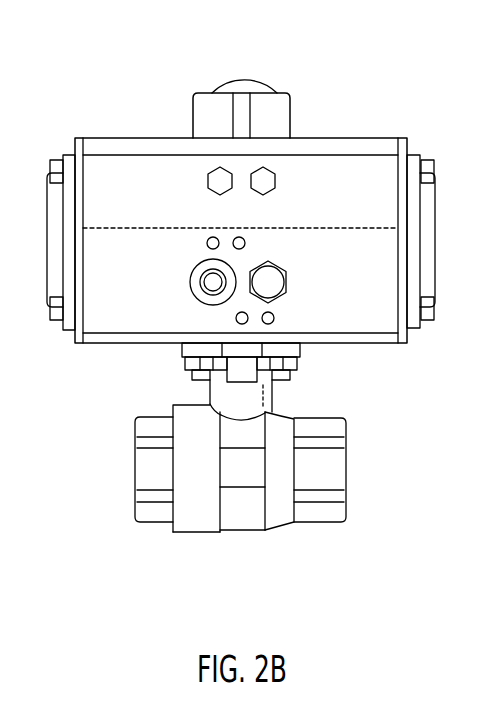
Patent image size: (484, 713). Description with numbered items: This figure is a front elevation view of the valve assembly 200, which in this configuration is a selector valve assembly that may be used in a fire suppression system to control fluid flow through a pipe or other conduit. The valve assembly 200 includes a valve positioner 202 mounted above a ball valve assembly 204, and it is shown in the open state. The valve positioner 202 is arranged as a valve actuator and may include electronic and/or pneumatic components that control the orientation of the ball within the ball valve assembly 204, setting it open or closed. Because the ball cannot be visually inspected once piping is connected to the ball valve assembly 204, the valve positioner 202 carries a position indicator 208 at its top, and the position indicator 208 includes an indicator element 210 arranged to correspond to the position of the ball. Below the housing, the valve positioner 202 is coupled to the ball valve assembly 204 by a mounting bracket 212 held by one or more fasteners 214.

The valve assembly 200 is at (68, 127).
The valve positioner 202 is at (358, 155).
The ball valve assembly 204 is at (229, 548).
The position indicator 208 is at (205, 92).
The indicator element 210 is at (241, 103).
The mounting bracket 212 is at (292, 348).
The fasteners 214 is at (188, 360).